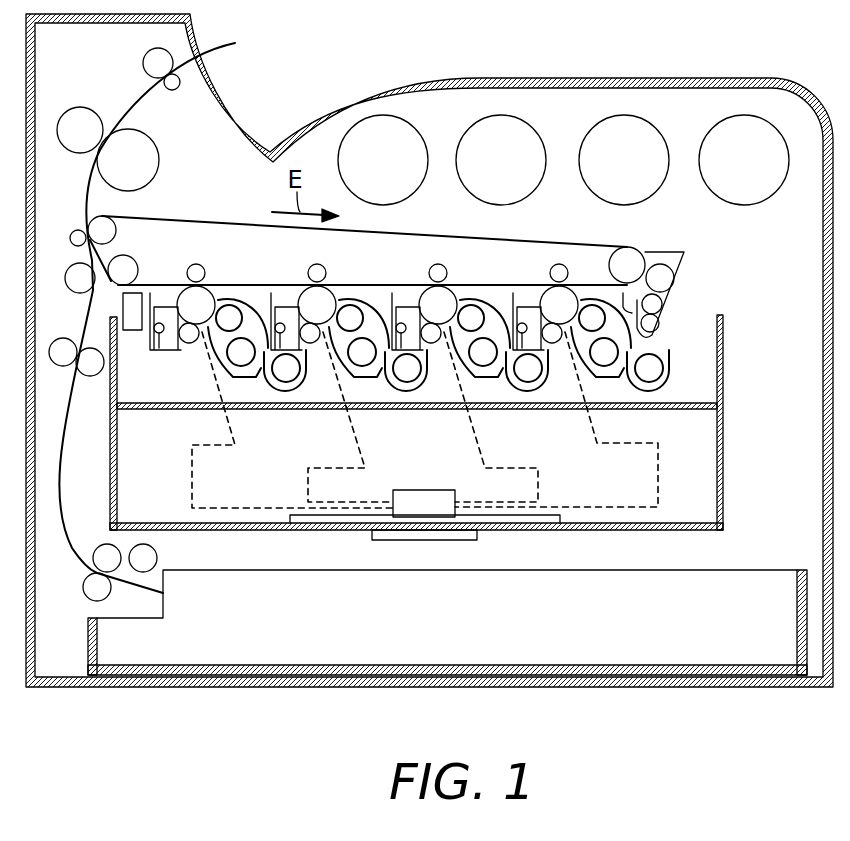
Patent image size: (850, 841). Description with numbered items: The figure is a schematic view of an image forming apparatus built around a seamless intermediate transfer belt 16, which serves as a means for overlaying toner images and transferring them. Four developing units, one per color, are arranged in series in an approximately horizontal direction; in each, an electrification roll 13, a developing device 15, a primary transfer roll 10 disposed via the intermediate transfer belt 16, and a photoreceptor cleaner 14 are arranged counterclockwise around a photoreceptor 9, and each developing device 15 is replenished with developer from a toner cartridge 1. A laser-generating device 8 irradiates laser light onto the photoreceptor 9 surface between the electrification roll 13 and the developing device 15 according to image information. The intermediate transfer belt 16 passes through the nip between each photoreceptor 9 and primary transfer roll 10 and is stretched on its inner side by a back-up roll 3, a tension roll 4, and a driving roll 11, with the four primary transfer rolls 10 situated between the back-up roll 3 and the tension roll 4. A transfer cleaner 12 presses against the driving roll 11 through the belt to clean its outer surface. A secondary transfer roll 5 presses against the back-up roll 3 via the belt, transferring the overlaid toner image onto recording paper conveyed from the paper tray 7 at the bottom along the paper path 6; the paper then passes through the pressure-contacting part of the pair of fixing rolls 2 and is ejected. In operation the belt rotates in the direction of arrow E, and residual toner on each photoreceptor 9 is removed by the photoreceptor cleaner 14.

The toner cartridge 1 is at (460, 144).
The pair of fixing rolls 2 is at (82, 107).
The back-up roll 3 is at (116, 231).
The tension roll 4 is at (105, 293).
The secondary transfer roll 5 is at (70, 237).
The paper path 6 is at (63, 517).
The paper tray 7 is at (473, 660).
The laser-generating device 8 is at (425, 490).
The photoreceptor 9 is at (218, 296).
The primary transfer roll 10 is at (204, 272).
The driving roll 11 is at (630, 254).
The transfer cleaner 12 is at (690, 253).
The electrification roll 13 is at (190, 345).
The photoreceptor cleaner 14 is at (162, 300).
The developing device 15 is at (258, 375).
The intermediate transfer belt 16 is at (195, 220).